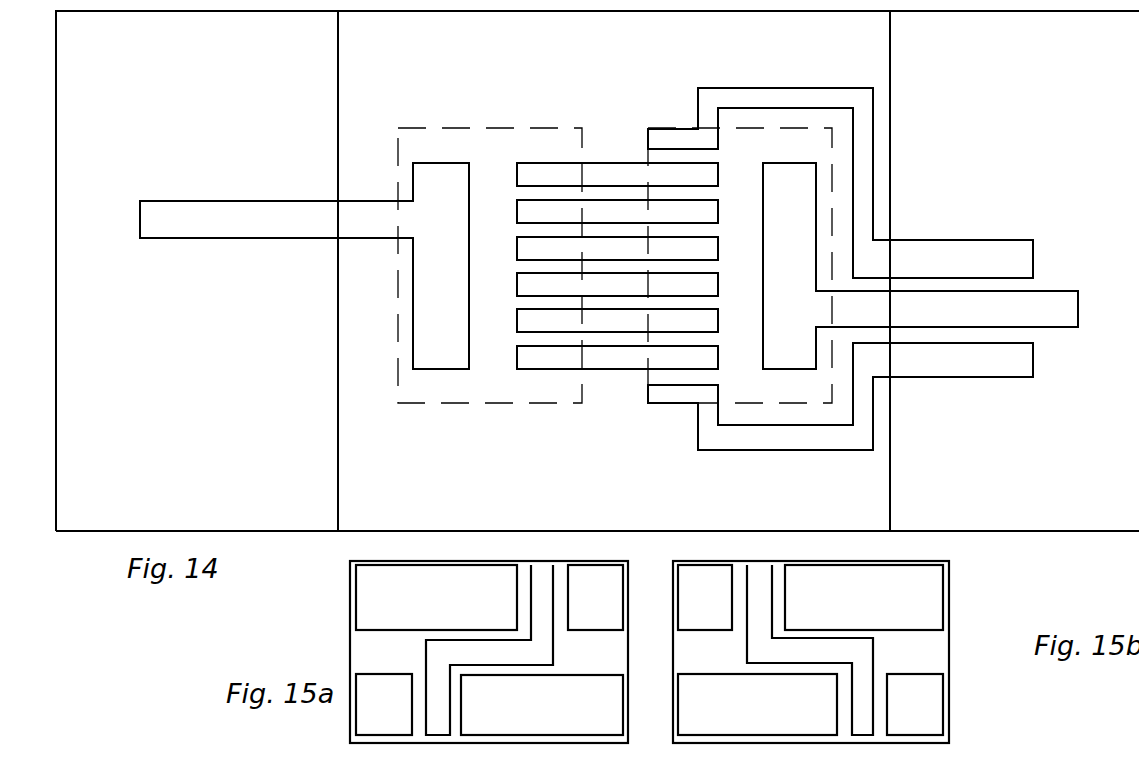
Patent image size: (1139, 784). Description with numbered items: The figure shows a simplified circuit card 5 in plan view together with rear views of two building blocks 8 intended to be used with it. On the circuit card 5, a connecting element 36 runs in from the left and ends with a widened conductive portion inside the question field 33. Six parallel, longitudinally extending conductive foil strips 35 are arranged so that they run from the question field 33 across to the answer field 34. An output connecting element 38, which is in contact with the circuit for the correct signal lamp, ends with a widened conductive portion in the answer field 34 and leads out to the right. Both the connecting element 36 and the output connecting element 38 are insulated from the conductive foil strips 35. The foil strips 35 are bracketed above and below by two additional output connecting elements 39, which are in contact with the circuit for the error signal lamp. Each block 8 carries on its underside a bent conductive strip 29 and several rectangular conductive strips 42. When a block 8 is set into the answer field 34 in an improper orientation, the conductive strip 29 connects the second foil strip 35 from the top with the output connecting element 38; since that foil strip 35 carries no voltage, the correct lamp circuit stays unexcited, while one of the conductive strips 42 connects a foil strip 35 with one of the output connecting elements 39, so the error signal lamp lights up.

In FIG. 14, the circuit card 5 is at (352, 517).
In FIG. 14, the question field 33 is at (502, 142).
In FIG. 14, the answer field 34 is at (772, 143).
In FIG. 14, the conductive foil strips 35 is at (552, 360).
In FIG. 14, the connecting element 36 is at (233, 210).
In FIG. 14, the output connecting element 38 is at (1067, 320).
In FIG. 14, the additional output connecting elements 39 is at (977, 250).
In FIG. 15A, the block 8 is at (362, 647).
In FIG. 15B, the block 8 is at (933, 652).
In FIG. 15A, the conductive strip 29 is at (522, 657).
In FIG. 15B, the conductive strip 29 is at (763, 650).
In FIG. 15A, the conductive strips 42 is at (612, 612).
In FIG. 15B, the conductive strips 42 is at (688, 610).